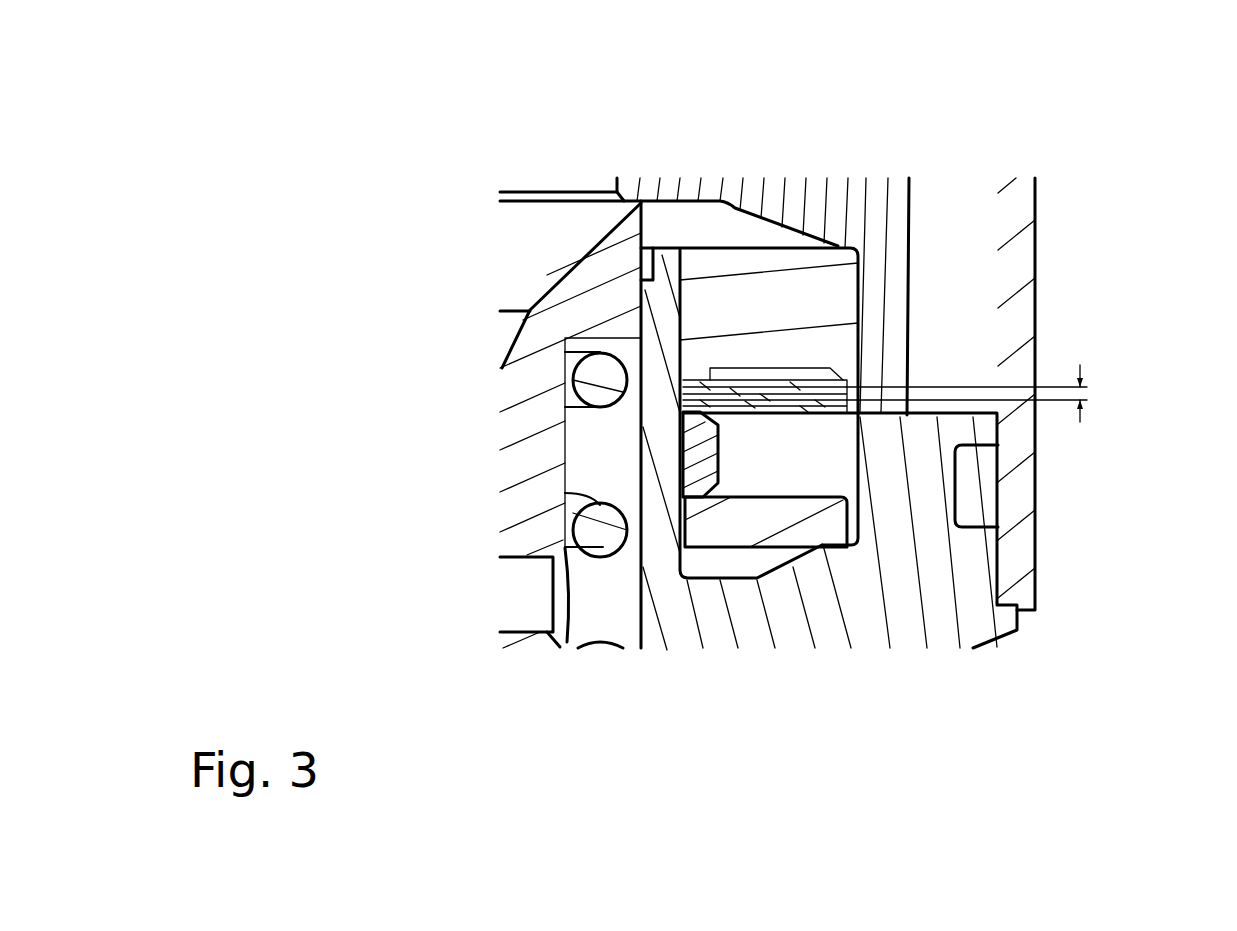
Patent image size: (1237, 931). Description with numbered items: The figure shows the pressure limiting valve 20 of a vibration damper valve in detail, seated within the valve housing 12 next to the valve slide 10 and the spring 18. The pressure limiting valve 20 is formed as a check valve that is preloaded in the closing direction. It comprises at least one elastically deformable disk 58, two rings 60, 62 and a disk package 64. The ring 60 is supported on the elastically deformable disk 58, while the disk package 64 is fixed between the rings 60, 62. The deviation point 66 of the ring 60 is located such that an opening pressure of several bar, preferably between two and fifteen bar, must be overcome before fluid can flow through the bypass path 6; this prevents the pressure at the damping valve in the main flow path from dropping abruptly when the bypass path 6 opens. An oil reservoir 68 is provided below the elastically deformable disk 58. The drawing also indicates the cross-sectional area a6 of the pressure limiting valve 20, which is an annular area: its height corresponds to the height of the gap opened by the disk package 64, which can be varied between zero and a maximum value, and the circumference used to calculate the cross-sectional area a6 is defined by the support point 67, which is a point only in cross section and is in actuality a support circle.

The bypass path 6 is at (767, 232).
The valve slide 10 is at (597, 277).
The valve housing 12 is at (880, 220).
The spring 18 is at (608, 542).
The pressure limiting valve 20 is at (727, 225).
The elastically deformable disk 58 is at (748, 523).
The ring 60 is at (698, 452).
The ring 62 is at (803, 313).
The disk package 64 is at (880, 467).
The deviation point 66 is at (690, 422).
The support point 67 is at (840, 373).
The oil reservoir 68 is at (713, 563).
The cross-sectional area a6 is at (1087, 392).